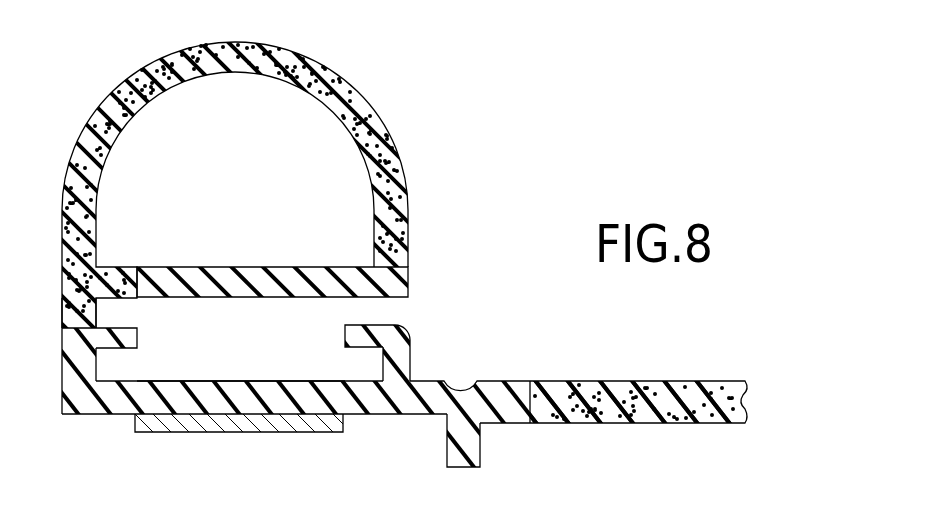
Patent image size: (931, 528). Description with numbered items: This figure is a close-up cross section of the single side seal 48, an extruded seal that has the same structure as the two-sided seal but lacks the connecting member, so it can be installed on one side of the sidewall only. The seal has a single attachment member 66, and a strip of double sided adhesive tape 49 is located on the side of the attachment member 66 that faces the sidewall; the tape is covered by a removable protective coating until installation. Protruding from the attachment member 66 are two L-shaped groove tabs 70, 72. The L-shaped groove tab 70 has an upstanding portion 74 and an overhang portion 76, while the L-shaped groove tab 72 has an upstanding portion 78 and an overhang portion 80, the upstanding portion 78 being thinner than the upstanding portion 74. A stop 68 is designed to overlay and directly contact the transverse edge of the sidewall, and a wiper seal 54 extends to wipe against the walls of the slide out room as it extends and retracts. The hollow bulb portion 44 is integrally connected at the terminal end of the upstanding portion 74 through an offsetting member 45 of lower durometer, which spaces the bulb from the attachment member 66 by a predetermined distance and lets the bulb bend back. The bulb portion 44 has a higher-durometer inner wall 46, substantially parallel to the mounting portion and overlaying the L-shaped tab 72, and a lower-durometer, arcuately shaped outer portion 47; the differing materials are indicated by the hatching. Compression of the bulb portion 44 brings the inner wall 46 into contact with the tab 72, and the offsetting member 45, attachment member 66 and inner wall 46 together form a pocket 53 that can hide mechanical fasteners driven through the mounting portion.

The bulb portion 44 is at (465, 264).
The offsetting member 45 is at (57, 303).
The inner wall 46 is at (249, 266).
The outer portion 47 is at (140, 67).
The single side seal 48 is at (405, 264).
The double sided adhesive tape 49 is at (268, 435).
The pocket 53 is at (241, 358).
The wiper seal 54 is at (617, 380).
The attachment member 66 is at (366, 427).
The stop 68 is at (470, 462).
The L-shaped groove tab 70 is at (405, 264).
The L-shaped groove tab 72 is at (392, 331).
The upstanding portion 74 is at (70, 383).
The overhang portion 76 is at (127, 343).
The upstanding portion 78 is at (379, 351).
The overhang portion 80 is at (352, 335).